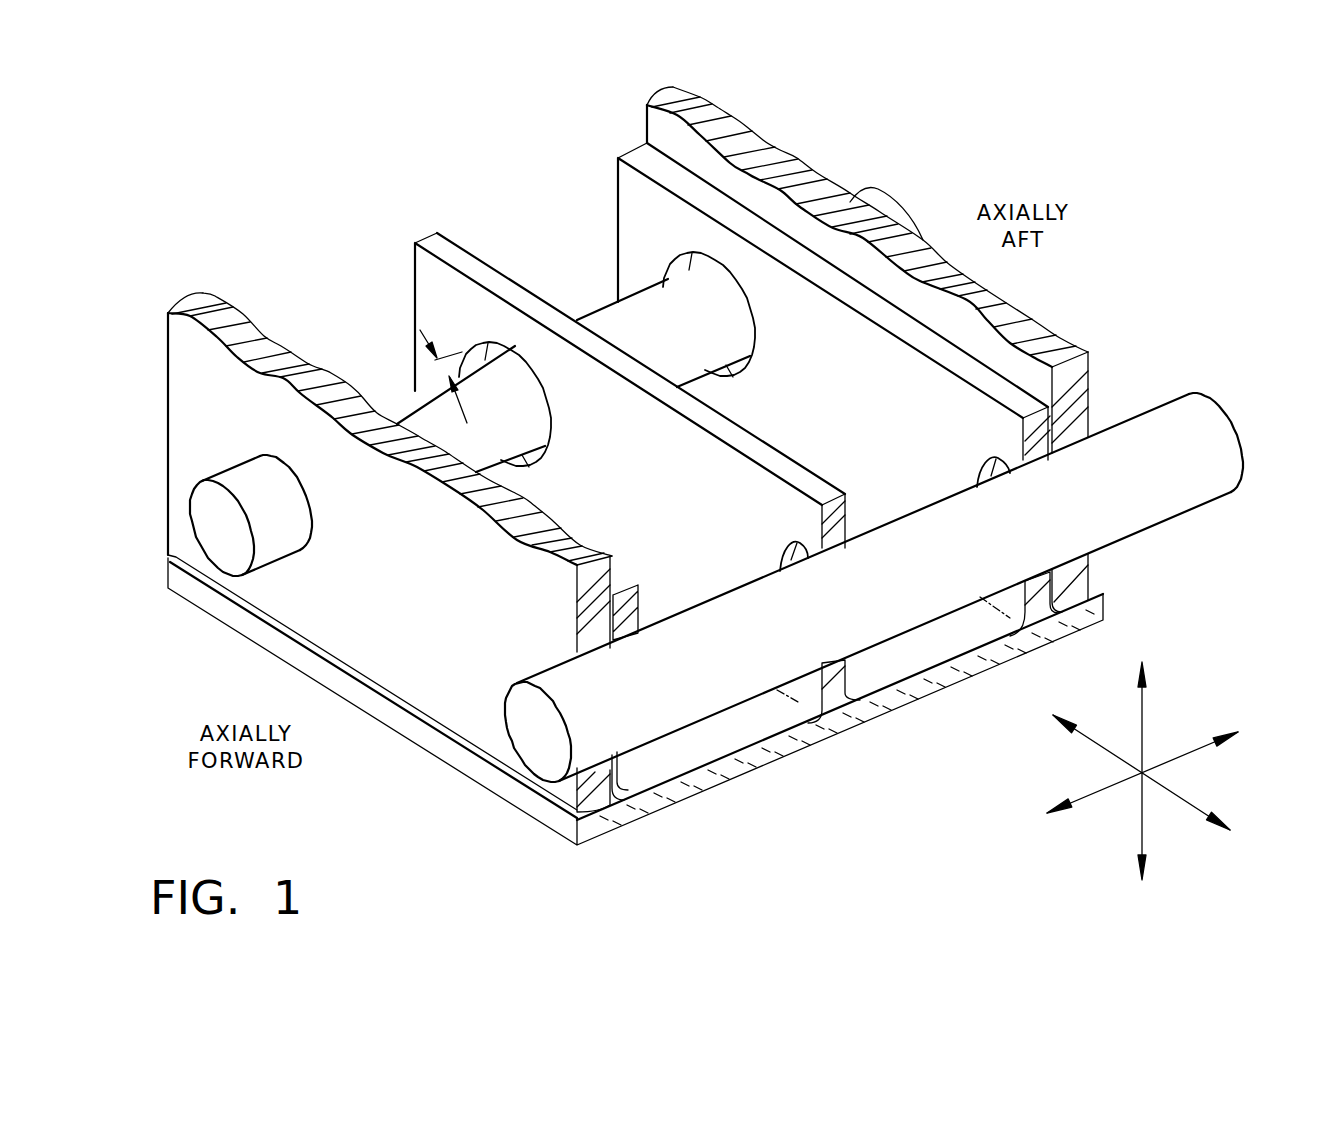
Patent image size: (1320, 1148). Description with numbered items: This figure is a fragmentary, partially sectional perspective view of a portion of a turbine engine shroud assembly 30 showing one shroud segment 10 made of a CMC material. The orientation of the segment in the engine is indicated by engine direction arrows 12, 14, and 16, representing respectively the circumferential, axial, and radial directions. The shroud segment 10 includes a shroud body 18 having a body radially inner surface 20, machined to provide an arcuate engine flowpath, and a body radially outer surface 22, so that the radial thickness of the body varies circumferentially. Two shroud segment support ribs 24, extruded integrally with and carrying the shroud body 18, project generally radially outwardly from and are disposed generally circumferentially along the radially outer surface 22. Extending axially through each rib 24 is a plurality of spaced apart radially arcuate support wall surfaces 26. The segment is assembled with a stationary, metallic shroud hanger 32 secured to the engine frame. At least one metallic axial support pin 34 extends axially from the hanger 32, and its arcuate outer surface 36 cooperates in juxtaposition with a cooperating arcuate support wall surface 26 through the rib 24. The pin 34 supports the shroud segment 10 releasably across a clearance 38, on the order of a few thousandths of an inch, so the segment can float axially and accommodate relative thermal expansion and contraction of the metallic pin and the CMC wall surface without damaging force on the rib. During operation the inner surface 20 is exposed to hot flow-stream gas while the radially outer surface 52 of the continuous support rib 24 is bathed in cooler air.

The shroud segment 10 is at (462, 225).
The engine direction arrow 12 is at (1107, 752).
The engine direction arrow 14 is at (1183, 753).
The engine direction arrow 16 is at (1138, 825).
The shroud body 18 is at (877, 720).
The body radially inner surface 20 is at (640, 816).
The body radially outer surface 22 is at (1090, 592).
The shroud segment support rib 24 is at (585, 480).
The arcuate support wall surface 26 is at (664, 275).
The turbine engine shroud assembly 30 is at (458, 815).
The shroud hanger 32 is at (1040, 334).
The support pin 34 is at (205, 502).
The arcuate outer surface 36 is at (262, 522).
The clearance 38 is at (466, 408).
The radially outer surface of support rib 52 is at (432, 240).